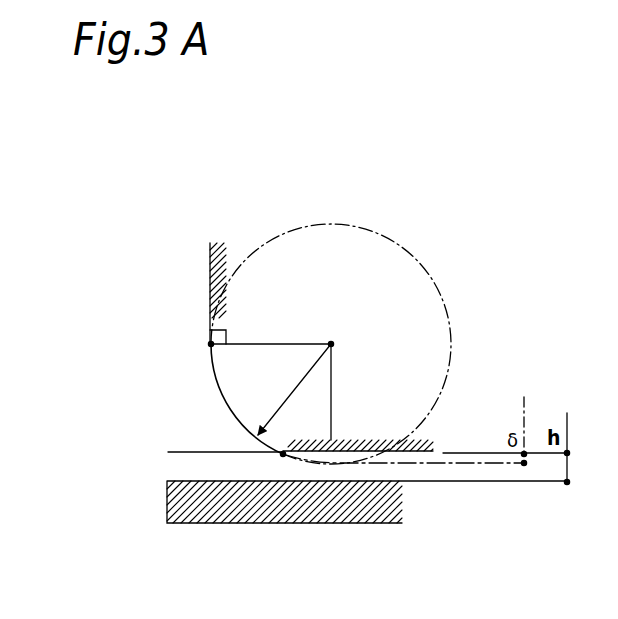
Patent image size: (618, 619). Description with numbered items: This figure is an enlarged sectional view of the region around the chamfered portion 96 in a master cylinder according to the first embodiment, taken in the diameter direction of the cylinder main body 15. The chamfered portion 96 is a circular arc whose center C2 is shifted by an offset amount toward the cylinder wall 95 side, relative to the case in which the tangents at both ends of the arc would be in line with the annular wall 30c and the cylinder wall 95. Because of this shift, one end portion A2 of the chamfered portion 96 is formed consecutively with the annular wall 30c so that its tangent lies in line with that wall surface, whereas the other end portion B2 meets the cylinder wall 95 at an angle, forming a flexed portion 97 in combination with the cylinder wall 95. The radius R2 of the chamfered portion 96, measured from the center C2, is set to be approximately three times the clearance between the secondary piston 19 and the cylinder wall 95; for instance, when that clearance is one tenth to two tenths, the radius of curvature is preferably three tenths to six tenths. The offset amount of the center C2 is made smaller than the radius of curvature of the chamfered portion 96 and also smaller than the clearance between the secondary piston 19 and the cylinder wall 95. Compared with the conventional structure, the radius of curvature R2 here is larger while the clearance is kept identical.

The cylinder main body 15 is at (242, 261).
The annular wall 30c is at (210, 269).
The chamfered portion 96 is at (221, 399).
The flexed portion 97 is at (285, 458).
The cylinder wall 95 is at (412, 446).
The secondary piston 19 is at (255, 508).
The one end portion A2 is at (196, 346).
The other end portion B2 is at (271, 466).
The center of the arc shape C2 is at (345, 335).
The radius of the chamfered portion R2 is at (294, 389).